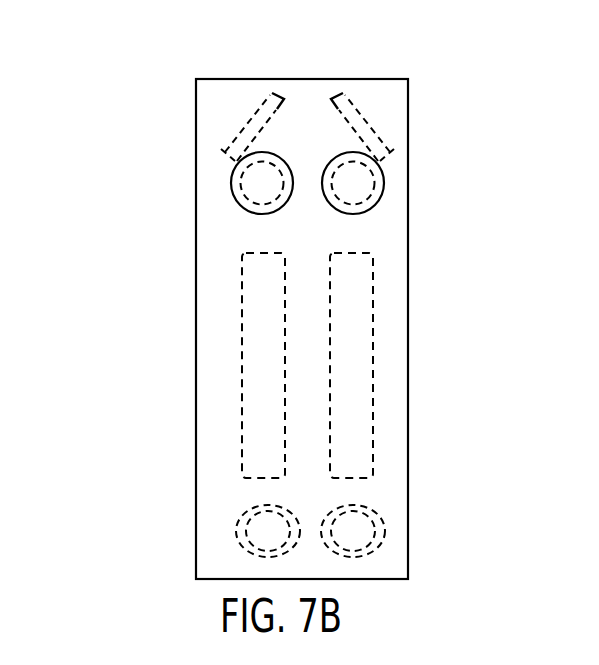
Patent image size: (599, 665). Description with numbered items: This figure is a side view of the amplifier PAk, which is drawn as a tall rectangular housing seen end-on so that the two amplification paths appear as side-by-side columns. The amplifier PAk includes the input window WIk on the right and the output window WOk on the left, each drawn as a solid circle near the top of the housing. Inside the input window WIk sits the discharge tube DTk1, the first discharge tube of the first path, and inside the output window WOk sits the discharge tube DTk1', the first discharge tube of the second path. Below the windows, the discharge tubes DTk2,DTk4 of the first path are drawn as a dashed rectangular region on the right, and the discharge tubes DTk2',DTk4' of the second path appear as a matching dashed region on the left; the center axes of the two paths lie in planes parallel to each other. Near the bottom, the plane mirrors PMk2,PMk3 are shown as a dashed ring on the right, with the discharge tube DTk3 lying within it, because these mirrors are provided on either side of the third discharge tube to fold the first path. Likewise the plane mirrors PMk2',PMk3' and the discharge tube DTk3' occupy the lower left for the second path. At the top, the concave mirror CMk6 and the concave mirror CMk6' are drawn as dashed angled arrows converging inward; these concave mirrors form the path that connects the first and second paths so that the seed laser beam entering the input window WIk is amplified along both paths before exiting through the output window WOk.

The amplifier PAk is at (402, 62).
The concave mirror CMk6' is at (199, 117).
The concave mirror CMk6 is at (414, 117).
The output window WOk is at (232, 183).
The input window WIk is at (382, 188).
The discharge tube DTk1' is at (199, 209).
The discharge tube DTk1 is at (411, 210).
The discharge tubes DTk2',DTk4' is at (159, 365).
The discharge tubes DTk2,DTk4 is at (370, 362).
The plane mirrors PMk2',PMk3' is at (166, 515).
The plane mirrors PMk2,PMk3 is at (382, 525).
The discharge tube DTk3' is at (206, 555).
The discharge tube DTk3 is at (413, 556).